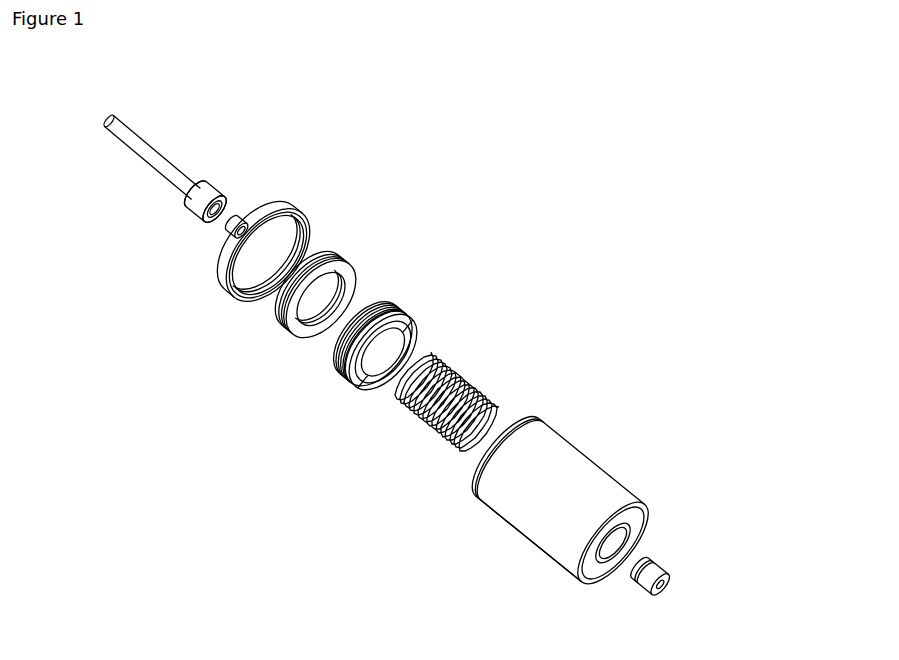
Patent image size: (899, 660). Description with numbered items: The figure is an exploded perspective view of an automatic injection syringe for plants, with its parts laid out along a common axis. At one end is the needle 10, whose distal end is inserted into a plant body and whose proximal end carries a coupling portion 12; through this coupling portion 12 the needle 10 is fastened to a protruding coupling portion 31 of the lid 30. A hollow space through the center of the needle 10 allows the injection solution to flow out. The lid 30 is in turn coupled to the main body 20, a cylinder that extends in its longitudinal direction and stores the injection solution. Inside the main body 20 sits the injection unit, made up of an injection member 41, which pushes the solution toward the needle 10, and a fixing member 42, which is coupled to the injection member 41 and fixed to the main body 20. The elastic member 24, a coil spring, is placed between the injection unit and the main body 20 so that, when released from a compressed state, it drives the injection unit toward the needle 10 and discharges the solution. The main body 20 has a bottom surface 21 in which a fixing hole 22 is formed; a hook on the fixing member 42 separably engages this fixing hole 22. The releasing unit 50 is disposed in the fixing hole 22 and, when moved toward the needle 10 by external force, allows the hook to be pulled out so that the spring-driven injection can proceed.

The needle 10 is at (156, 167).
The coupling portion 12 is at (216, 183).
The main body 20 is at (567, 460).
The bottom surface 21 is at (578, 580).
The fixing hole 22 is at (645, 514).
The elastic member 24 is at (420, 415).
The lid 30 is at (260, 216).
The protruding coupling portion 31 is at (228, 231).
The injection member 41 is at (291, 336).
The fixing member 42 is at (398, 305).
The releasing unit 50 is at (672, 572).